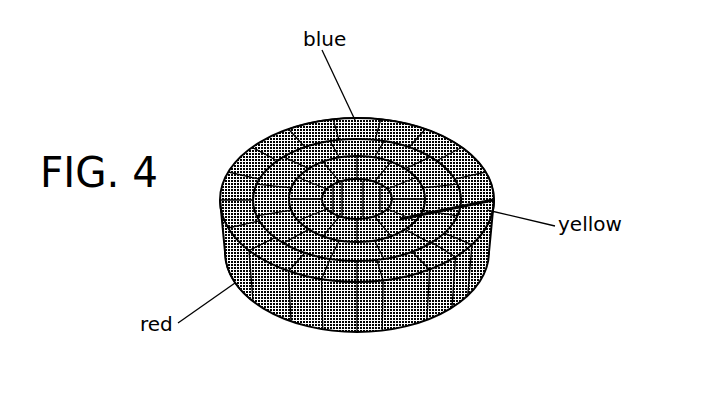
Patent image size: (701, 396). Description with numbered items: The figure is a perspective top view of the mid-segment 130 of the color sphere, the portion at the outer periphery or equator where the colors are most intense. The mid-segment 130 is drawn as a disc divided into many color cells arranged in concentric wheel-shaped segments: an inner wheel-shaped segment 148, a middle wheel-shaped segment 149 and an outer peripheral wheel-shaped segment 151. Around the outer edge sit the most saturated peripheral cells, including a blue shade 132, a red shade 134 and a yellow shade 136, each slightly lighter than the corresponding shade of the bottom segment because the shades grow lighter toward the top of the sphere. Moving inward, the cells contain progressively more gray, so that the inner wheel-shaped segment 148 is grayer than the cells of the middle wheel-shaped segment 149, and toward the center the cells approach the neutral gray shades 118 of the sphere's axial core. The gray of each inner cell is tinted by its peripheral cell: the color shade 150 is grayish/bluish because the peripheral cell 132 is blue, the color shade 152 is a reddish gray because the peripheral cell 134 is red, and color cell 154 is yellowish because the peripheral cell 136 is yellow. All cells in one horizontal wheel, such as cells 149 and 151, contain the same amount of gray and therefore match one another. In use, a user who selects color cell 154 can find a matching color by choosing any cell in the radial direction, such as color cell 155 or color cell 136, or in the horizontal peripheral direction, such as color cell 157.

The mid-segment 130 is at (492, 111).
The color shade 150 is at (316, 121).
The blue shade 132 is at (365, 119).
The inner wheel-shaped segment 148 is at (398, 122).
The middle wheel-shaped segment 149 is at (428, 134).
The outer peripheral wheel-shaped segment 151 is at (449, 136).
The color cell 154 is at (470, 152).
The color cell 155 is at (486, 176).
The yellow shade 136 is at (487, 198).
The gray shades 118 is at (487, 250).
The color cell 157 is at (431, 270).
The color shade 152 is at (323, 329).
The red shade 134 is at (221, 257).